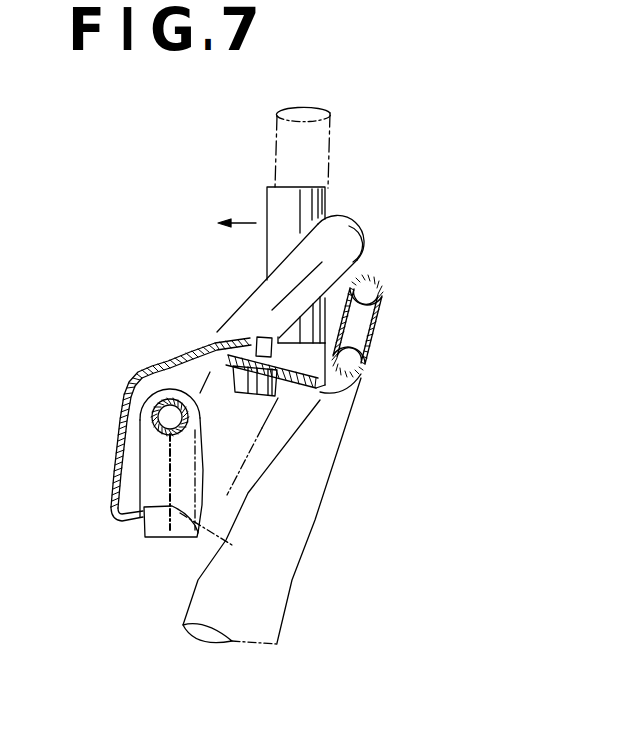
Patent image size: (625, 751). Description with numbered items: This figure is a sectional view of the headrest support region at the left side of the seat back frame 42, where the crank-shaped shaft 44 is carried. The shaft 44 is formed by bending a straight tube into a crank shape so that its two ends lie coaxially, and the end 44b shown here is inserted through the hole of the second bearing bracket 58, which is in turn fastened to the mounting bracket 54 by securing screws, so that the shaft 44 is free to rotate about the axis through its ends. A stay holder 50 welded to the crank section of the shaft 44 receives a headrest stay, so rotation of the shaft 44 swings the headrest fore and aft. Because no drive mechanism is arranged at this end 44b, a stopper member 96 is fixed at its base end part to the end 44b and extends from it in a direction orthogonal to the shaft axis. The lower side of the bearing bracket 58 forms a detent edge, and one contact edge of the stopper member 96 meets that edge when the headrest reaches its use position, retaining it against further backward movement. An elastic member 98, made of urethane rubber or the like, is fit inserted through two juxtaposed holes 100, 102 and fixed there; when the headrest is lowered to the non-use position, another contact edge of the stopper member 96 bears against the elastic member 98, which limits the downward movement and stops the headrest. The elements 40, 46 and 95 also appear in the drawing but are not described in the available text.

The brake operating device 40 is at (148, 188).
The seat back frame 42 is at (370, 334).
The shaft 44 is at (255, 303).
The end of shaft 44b is at (150, 384).
The handlebar 46 is at (325, 162).
The stay holder 50 is at (328, 207).
The mounting bracket 54 is at (326, 400).
The second bearing bracket 58 is at (117, 518).
The brake lever 95 is at (255, 468).
The stopper member 96 is at (140, 453).
The elastic member 98 is at (277, 401).
The hole 100 is at (243, 397).
The hole 102 is at (252, 338).